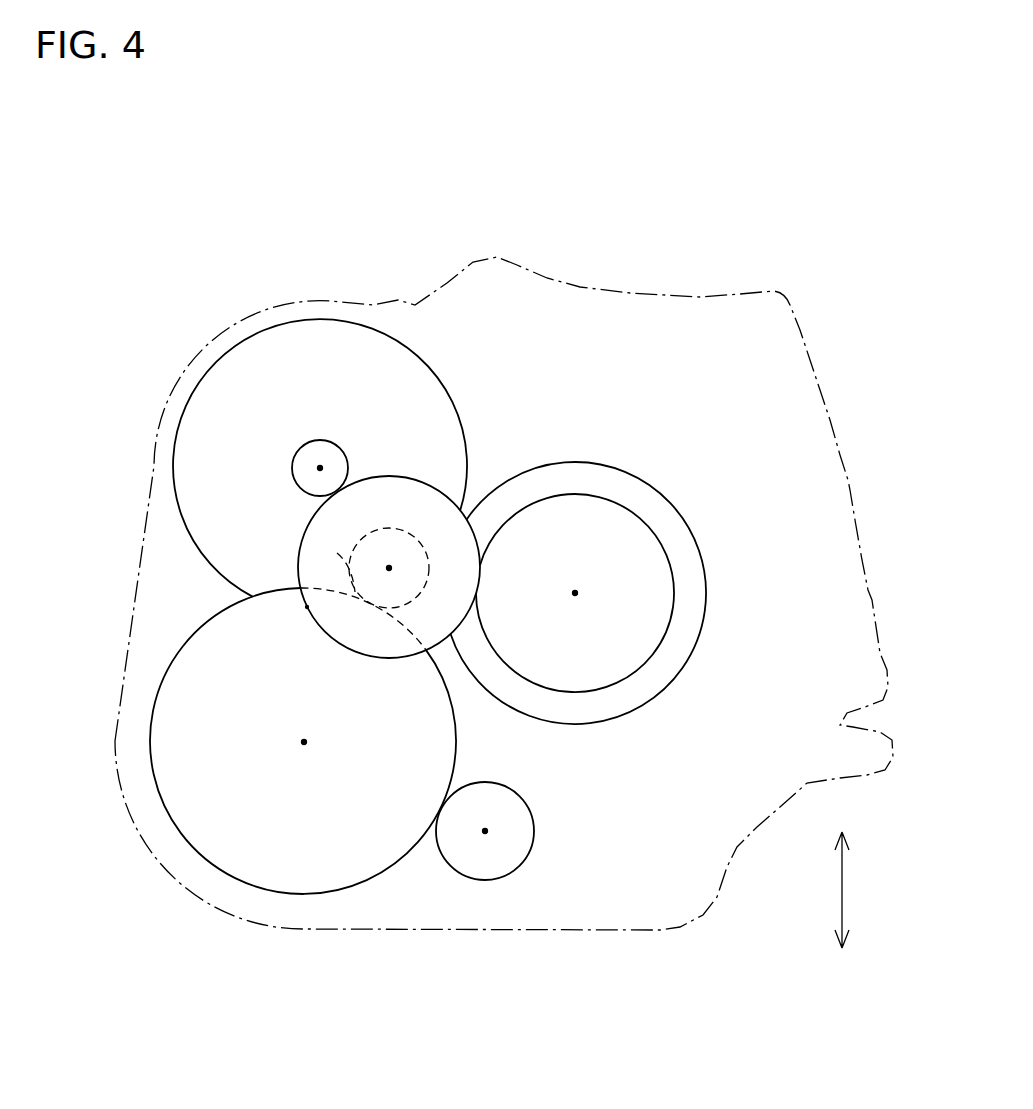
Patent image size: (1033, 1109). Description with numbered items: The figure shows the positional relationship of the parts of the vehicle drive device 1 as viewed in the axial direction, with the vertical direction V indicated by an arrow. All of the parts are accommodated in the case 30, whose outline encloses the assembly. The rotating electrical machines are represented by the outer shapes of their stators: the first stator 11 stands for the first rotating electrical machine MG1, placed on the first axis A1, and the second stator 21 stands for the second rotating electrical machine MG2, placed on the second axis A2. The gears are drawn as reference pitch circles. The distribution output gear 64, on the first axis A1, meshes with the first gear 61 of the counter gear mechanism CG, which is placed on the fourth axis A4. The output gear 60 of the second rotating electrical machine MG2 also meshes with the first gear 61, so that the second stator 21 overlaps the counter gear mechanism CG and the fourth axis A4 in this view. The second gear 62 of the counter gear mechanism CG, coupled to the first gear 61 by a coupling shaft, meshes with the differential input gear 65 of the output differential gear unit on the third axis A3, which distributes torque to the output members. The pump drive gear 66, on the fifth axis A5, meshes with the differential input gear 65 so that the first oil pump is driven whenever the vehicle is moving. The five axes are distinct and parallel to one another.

The vehicle drive device 1 is at (145, 352).
The first stator 11 is at (567, 725).
The second stator 21 is at (410, 350).
The case 30 is at (830, 413).
The output gear 60 is at (322, 437).
The first gear 61 is at (353, 656).
The second gear 62 is at (337, 553).
The distribution output gear 64 is at (567, 493).
The differential input gear 65 is at (383, 872).
The pump drive gear 66 is at (533, 831).
The first axis A1 is at (575, 593).
The second axis A2 is at (320, 468).
The third axis A3 is at (304, 742).
The fourth axis A4 is at (389, 568).
The fifth axis A5 is at (485, 831).
The counter gear mechanism CG is at (307, 607).
The vertical direction V is at (850, 890).